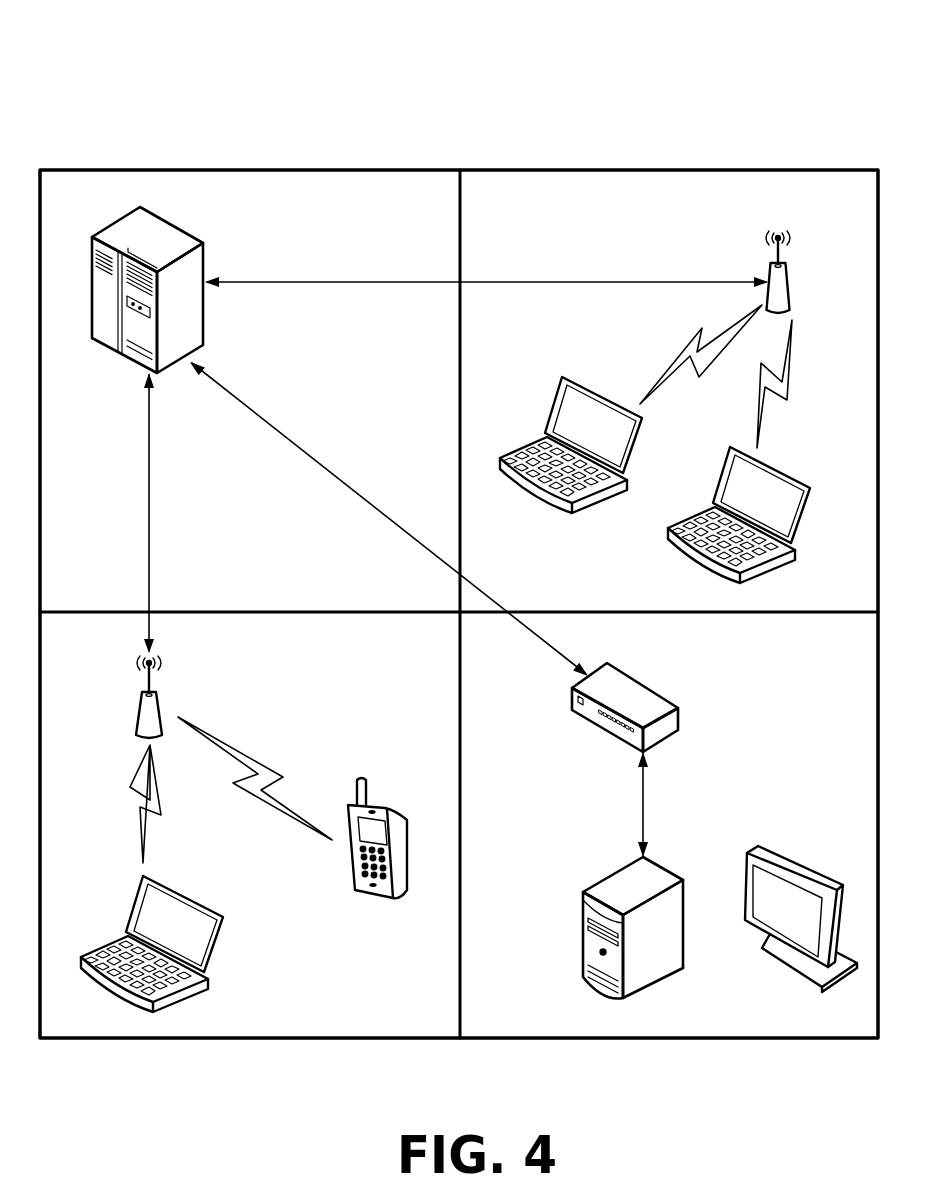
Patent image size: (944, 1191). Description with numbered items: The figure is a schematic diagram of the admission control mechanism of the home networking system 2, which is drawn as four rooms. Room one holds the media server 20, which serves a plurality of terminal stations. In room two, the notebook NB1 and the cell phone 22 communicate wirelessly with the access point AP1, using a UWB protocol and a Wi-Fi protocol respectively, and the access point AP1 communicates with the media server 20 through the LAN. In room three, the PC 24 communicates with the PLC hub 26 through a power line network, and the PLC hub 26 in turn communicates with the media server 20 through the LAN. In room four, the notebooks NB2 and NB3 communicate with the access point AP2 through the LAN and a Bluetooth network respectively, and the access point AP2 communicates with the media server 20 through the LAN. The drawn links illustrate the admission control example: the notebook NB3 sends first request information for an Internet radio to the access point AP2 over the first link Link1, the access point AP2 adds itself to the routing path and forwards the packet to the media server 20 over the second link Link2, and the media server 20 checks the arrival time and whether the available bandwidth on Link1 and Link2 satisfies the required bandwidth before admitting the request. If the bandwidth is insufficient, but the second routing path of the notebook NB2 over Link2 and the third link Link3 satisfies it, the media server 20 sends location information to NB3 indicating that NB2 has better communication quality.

The home networking system 2 is at (473, 100).
The media server 20 is at (211, 341).
The cell phone 22 is at (383, 801).
The PC 24 is at (598, 886).
The PLC hub 26 is at (660, 690).
The access point AP1 is at (160, 706).
The access point AP2 is at (790, 290).
The notebook NB1 is at (215, 945).
The notebook NB2 is at (678, 548).
The notebook NB3 is at (558, 512).
The first link Link1 is at (685, 352).
The second link Link2 is at (548, 285).
The third link Link3 is at (762, 385).